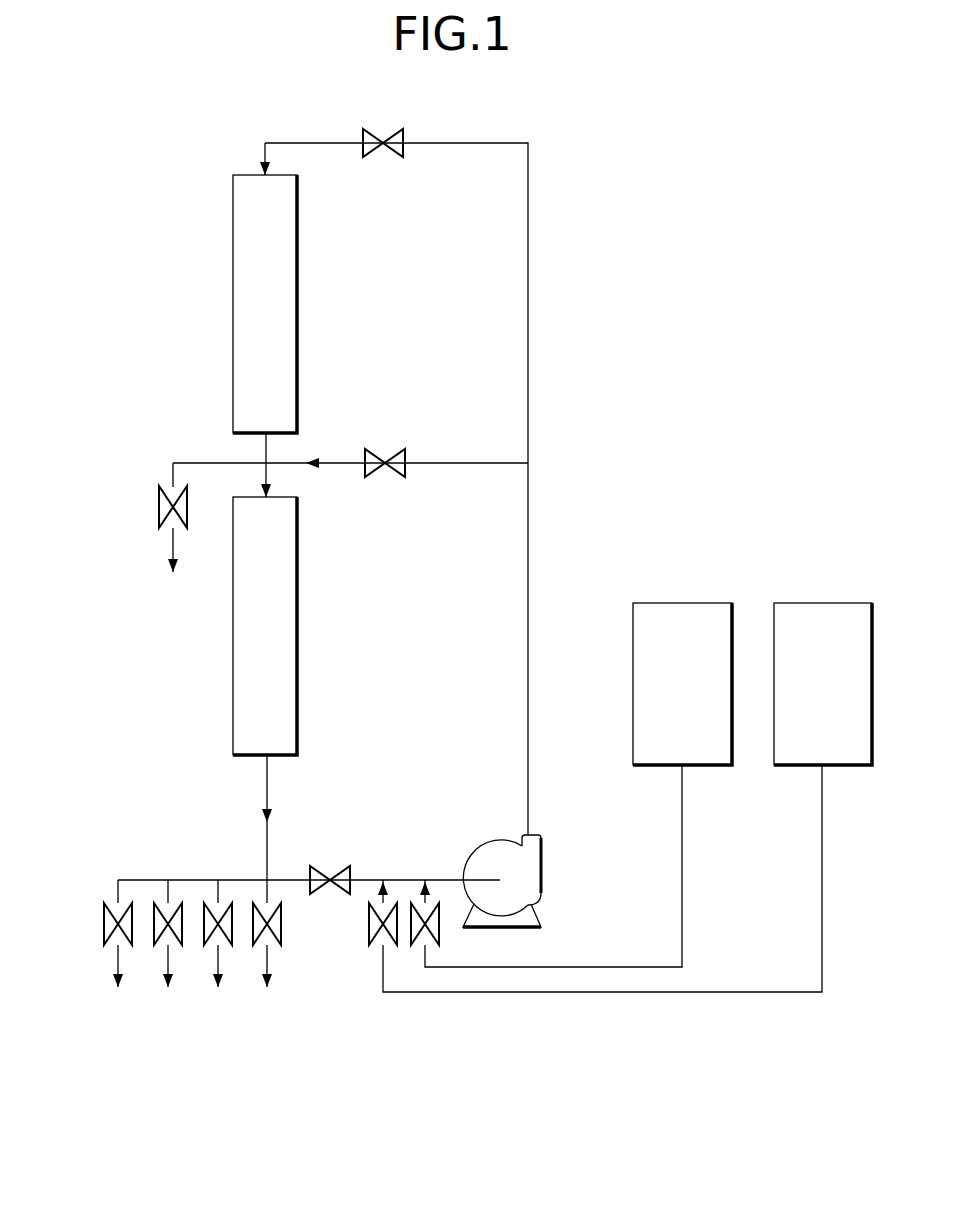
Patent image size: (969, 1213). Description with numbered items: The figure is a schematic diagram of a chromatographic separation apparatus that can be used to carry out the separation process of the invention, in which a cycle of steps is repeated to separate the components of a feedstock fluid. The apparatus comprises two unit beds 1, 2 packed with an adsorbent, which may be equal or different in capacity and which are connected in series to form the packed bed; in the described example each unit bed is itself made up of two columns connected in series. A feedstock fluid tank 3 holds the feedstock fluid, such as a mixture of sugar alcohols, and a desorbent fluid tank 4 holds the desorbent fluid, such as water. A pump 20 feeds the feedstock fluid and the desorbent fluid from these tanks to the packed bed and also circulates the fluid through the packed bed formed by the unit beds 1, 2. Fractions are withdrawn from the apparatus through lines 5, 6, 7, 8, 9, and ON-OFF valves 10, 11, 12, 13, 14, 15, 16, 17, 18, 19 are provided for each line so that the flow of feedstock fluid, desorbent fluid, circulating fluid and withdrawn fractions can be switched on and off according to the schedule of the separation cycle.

The unit bed 1 is at (233, 316).
The unit bed 2 is at (233, 655).
The feedstock fluid tank 3 is at (680, 602).
The desorbent fluid tank 4 is at (822, 602).
The line 5 is at (267, 1006).
The line 6 is at (218, 1006).
The line 7 is at (168, 1006).
The line 8 is at (118, 1006).
The line 9 is at (173, 588).
The ON-OFF valve 10 is at (330, 866).
The ON-OFF valve 11 is at (438, 935).
The ON-OFF valve 12 is at (372, 948).
The ON-OFF valve 13 is at (375, 129).
The ON-OFF valve 14 is at (378, 450).
The ON-OFF valve 15 is at (280, 928).
The ON-OFF valve 16 is at (226, 915).
The ON-OFF valve 17 is at (176, 915).
The ON-OFF valve 18 is at (104, 925).
The ON-OFF valve 19 is at (158, 516).
The pump 20 is at (527, 880).